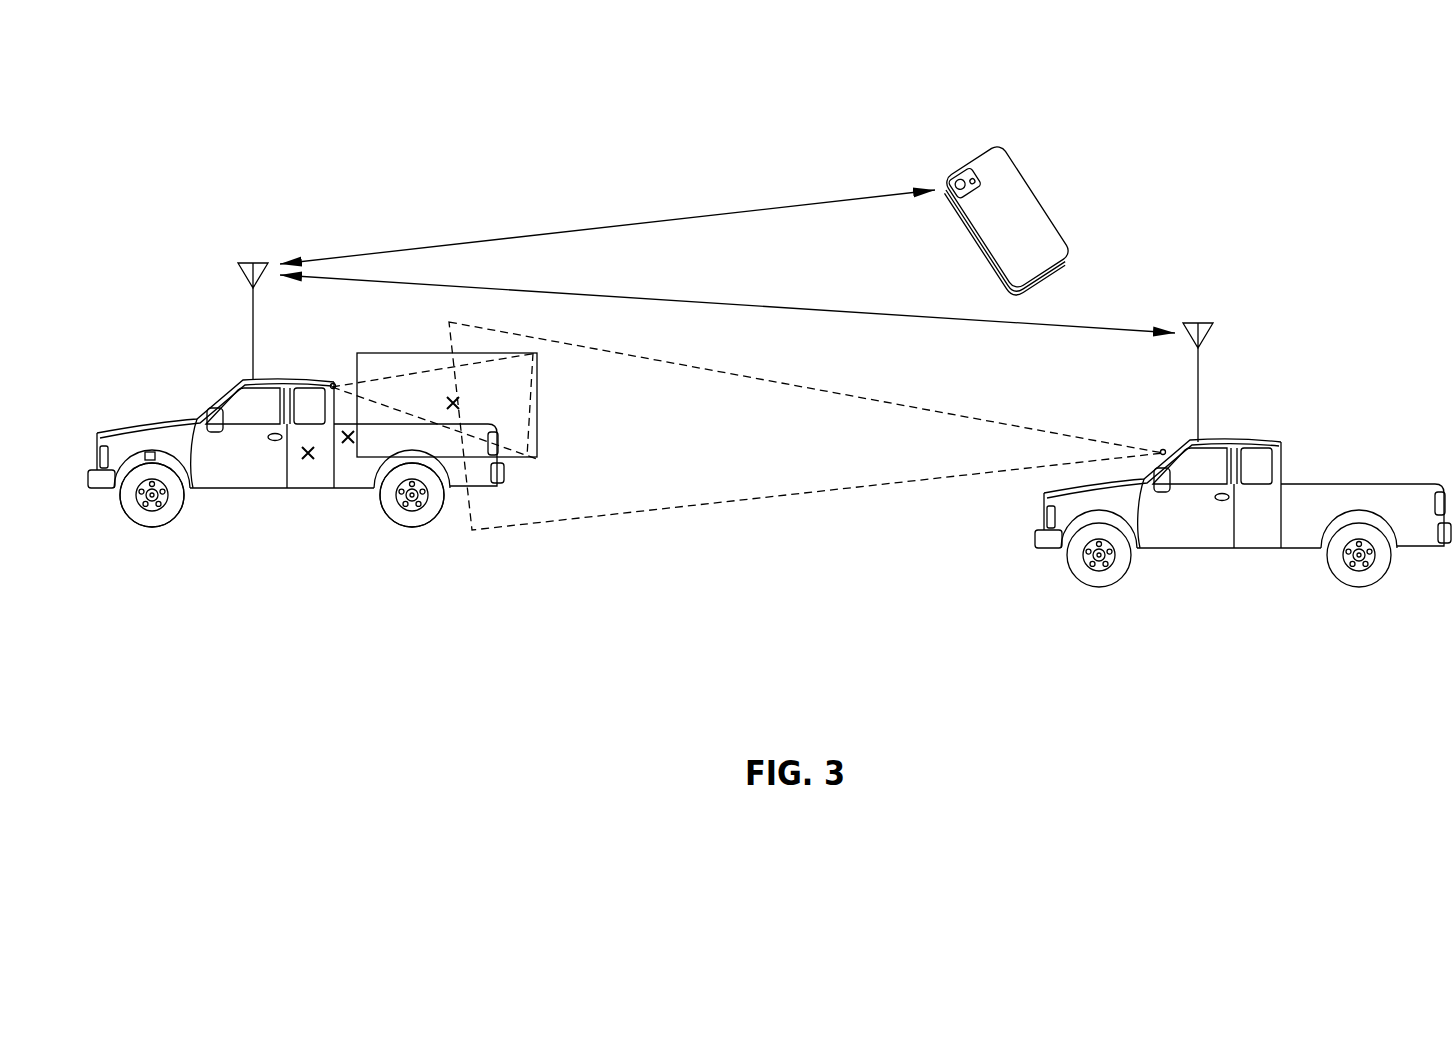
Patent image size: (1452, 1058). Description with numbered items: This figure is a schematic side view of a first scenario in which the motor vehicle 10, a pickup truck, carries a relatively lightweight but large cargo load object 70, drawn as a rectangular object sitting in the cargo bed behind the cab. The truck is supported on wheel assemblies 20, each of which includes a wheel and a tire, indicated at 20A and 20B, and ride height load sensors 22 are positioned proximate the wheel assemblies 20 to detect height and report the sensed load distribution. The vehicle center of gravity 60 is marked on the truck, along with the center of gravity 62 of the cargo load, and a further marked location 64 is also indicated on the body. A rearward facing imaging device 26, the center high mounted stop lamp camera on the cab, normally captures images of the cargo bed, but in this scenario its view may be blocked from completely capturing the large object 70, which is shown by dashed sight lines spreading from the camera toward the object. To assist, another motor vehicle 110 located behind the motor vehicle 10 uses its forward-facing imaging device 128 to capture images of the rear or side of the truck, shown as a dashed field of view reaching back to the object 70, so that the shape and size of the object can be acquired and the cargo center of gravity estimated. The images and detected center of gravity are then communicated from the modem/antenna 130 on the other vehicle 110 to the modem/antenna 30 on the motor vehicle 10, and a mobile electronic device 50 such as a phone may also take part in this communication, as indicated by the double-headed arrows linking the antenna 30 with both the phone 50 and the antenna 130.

The motor vehicle 10 is at (178, 352).
The wheel assembly 20 is at (118, 521).
The hub 20A is at (150, 501).
The tire 20B is at (185, 500).
The ride height load sensor 22 is at (150, 452).
The rearward facing imaging device 26 is at (333, 384).
The modem/antenna 30 is at (250, 262).
The mobile electronic device 50 is at (1003, 152).
The vehicle center of gravity 60 is at (300, 453).
The cargo load center of gravity 62 is at (449, 400).
The third target location 64 is at (344, 441).
The cargo load object 70 is at (386, 352).
The other motor vehicle 110 is at (1322, 396).
The forward-facing imaging device 128 is at (1163, 450).
The modem/antenna 130 is at (1212, 324).